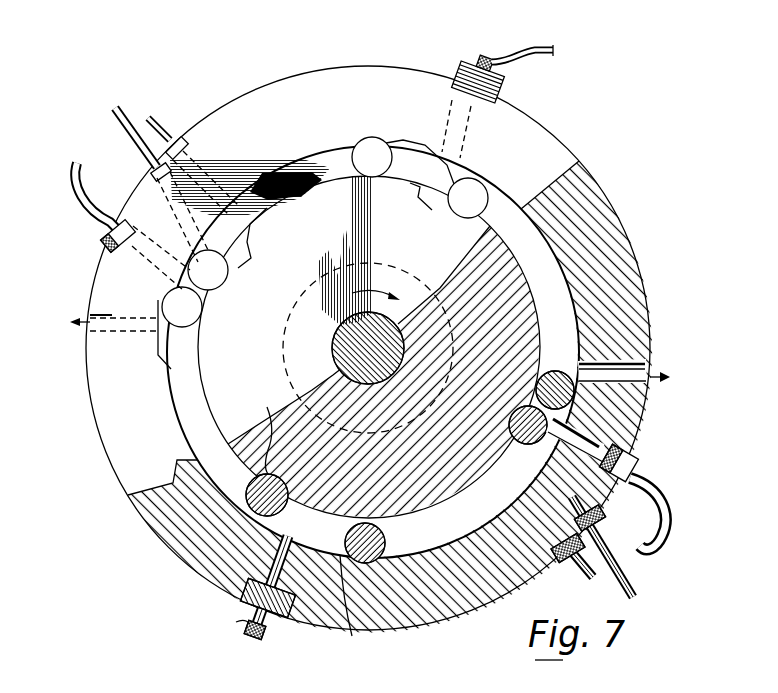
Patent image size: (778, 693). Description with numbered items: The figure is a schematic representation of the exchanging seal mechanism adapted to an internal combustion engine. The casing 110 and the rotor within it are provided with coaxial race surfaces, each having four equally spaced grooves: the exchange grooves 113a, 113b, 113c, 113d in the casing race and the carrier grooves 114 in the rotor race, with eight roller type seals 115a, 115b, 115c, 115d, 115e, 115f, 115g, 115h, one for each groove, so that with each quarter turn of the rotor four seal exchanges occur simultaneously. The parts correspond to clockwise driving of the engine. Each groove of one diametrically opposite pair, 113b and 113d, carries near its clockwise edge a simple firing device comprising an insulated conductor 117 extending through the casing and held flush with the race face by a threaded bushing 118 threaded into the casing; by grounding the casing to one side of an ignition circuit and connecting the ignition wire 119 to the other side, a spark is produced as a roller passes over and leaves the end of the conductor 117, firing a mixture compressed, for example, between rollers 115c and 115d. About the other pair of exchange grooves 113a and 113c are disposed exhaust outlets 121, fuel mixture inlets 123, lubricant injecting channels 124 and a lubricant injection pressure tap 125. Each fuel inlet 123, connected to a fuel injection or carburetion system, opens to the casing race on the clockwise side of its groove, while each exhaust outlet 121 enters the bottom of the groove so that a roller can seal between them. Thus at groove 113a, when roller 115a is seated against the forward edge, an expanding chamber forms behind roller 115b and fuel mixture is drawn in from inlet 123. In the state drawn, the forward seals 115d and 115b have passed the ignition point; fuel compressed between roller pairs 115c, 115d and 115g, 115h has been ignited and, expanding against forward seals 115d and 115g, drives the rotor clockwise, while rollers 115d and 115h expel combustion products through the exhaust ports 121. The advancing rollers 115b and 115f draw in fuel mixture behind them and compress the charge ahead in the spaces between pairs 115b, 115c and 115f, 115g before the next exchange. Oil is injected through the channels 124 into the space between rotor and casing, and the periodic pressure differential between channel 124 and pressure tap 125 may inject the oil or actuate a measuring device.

The casing 110 is at (376, 80).
The exchange groove 113a is at (157, 313).
The exchange groove 113b is at (408, 142).
The exchange groove 113c is at (618, 397).
The exchange groove 113d is at (349, 634).
The carrier grooves 114 is at (410, 214).
The roller 115a is at (200, 313).
The roller 115b is at (221, 283).
The roller 115c is at (372, 178).
The roller 115d is at (480, 196).
The roller 115e is at (540, 378).
The roller 115f is at (518, 410).
The roller 115g is at (387, 534).
The roller 115h is at (200, 458).
The insulated conductor 117 is at (233, 613).
The threaded bushing 118 is at (273, 632).
The ignition wire 119 is at (540, 58).
The exhaust outlet 121 is at (650, 368).
The fuel mixture inlet 123 is at (582, 445).
The lubricant injecting channel 124 is at (584, 497).
The lubricant injection pressure tap 125 is at (563, 533).